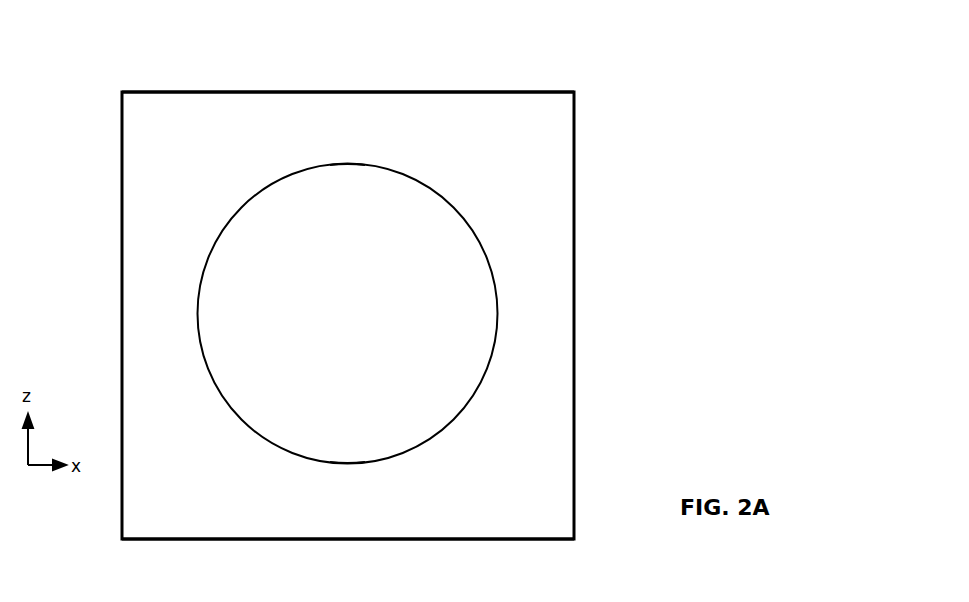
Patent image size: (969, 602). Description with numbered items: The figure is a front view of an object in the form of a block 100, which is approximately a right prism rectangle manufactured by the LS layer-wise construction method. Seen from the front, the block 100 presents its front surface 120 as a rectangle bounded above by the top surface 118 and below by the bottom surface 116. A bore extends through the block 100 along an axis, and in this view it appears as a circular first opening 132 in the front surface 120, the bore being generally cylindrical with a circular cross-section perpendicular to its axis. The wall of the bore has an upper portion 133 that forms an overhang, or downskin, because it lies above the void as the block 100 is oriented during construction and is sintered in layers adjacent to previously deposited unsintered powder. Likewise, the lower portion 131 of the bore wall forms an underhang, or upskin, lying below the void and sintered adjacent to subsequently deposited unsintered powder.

The block 100 is at (535, 67).
The bottom surface 116 is at (350, 540).
The top surface 118 is at (348, 92).
The front surface 120 is at (535, 227).
The lower portion of the wall of the bore 131 is at (348, 463).
The first opening 132 is at (393, 224).
The upper portion of the wall of the bore 133 is at (348, 164).